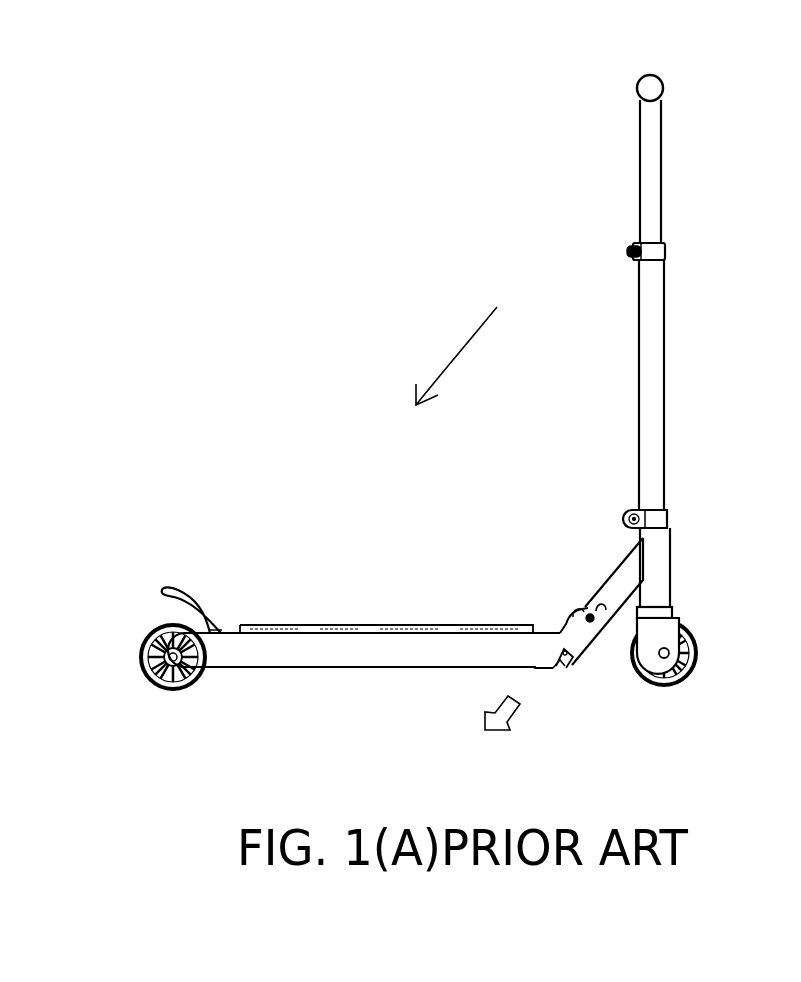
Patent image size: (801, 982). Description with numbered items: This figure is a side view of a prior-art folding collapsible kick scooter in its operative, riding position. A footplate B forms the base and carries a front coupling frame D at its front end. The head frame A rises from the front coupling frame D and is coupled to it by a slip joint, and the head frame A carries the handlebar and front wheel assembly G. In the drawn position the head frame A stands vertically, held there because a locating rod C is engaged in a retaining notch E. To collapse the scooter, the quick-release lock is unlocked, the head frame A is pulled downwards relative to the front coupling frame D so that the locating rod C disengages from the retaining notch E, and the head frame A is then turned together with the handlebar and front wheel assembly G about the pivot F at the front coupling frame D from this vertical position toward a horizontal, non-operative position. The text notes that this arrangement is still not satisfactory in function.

The handlebar and front wheel assembly G is at (653, 197).
The head frame A is at (623, 572).
The footplate B is at (415, 653).
The front coupling frame D is at (570, 622).
The pivot F is at (586, 613).
The locating rod C is at (571, 659).
The retaining notch E is at (560, 665).